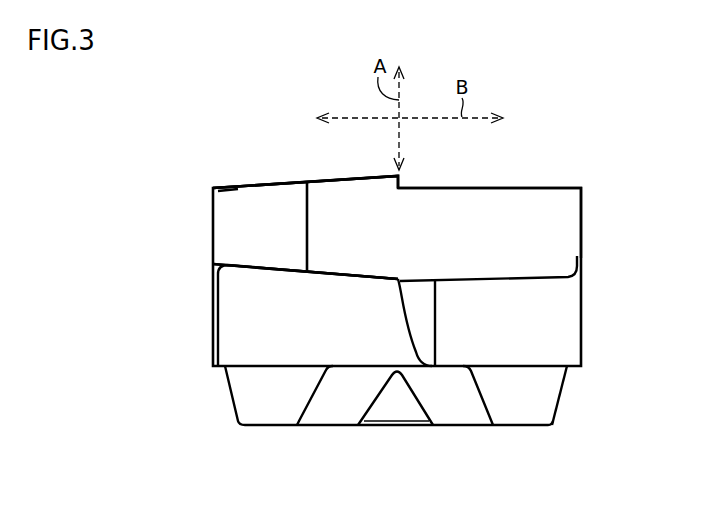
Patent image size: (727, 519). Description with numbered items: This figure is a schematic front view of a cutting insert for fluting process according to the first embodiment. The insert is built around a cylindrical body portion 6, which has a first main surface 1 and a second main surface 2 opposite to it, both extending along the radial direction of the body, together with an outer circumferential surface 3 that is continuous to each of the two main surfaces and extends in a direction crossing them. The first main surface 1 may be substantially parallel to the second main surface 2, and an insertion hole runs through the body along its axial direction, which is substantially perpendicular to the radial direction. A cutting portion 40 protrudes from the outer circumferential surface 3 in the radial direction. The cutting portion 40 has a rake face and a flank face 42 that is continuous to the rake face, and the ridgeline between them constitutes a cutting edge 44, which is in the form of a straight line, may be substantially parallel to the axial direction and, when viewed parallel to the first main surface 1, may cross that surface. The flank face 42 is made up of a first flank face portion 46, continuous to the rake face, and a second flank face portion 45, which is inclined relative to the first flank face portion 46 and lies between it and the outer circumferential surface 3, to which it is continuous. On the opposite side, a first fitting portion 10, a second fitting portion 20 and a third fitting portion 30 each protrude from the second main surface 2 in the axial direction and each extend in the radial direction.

The first main surface 1 is at (537, 187).
The second main surface 2 is at (443, 367).
The outer circumferential surface 3 is at (545, 320).
The cylindrical body portion 6 is at (616, 172).
The first fitting portion 10 is at (271, 402).
The second fitting portion 20 is at (521, 402).
The third fitting portion 30 is at (398, 402).
The cutting portion 40 is at (236, 231).
The flank face 42 is at (250, 227).
The cutting edge 44 is at (399, 257).
The second flank face portion 45 is at (247, 206).
The first flank face portion 46 is at (340, 240).